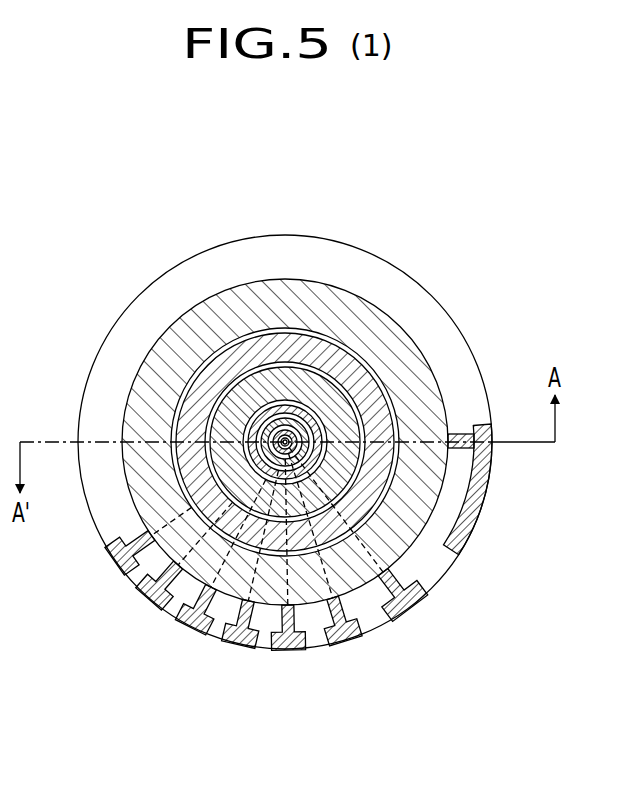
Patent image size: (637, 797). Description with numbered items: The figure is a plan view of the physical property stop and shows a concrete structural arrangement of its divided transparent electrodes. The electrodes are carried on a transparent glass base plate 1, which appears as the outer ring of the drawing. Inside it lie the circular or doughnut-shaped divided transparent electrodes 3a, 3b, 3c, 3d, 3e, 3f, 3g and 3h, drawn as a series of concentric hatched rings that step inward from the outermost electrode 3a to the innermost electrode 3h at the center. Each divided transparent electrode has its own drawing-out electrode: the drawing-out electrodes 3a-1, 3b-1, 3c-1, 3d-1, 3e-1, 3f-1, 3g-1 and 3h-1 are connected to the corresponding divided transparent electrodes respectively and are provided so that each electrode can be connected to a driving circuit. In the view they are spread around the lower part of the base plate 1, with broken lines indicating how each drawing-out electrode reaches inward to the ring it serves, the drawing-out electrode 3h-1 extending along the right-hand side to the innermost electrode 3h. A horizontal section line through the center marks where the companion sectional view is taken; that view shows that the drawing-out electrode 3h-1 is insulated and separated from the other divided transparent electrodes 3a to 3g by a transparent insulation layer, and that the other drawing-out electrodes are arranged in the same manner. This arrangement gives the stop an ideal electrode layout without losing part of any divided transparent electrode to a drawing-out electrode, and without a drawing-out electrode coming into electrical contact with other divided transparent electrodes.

The transparent glass base plate 1 is at (478, 412).
The divided transparent electrode 3a is at (163, 360).
The divided transparent electrode 3b is at (203, 388).
The divided transparent electrode 3c is at (220, 420).
The divided transparent electrode 3d is at (232, 438).
The divided transparent electrode 3e is at (238, 454).
The divided transparent electrode 3f is at (372, 366).
The divided transparent electrode 3g is at (392, 378).
The divided transparent electrode 3h is at (402, 410).
The drawing-out electrode 3a-1 is at (117, 558).
The drawing-out electrode 3b-1 is at (150, 594).
The drawing-out electrode 3c-1 is at (190, 624).
The drawing-out electrode 3d-1 is at (241, 642).
The drawing-out electrode 3e-1 is at (291, 648).
The drawing-out electrode 3f-1 is at (347, 637).
The drawing-out electrode 3g-1 is at (412, 600).
The drawing-out electrode 3h-1 is at (456, 548).